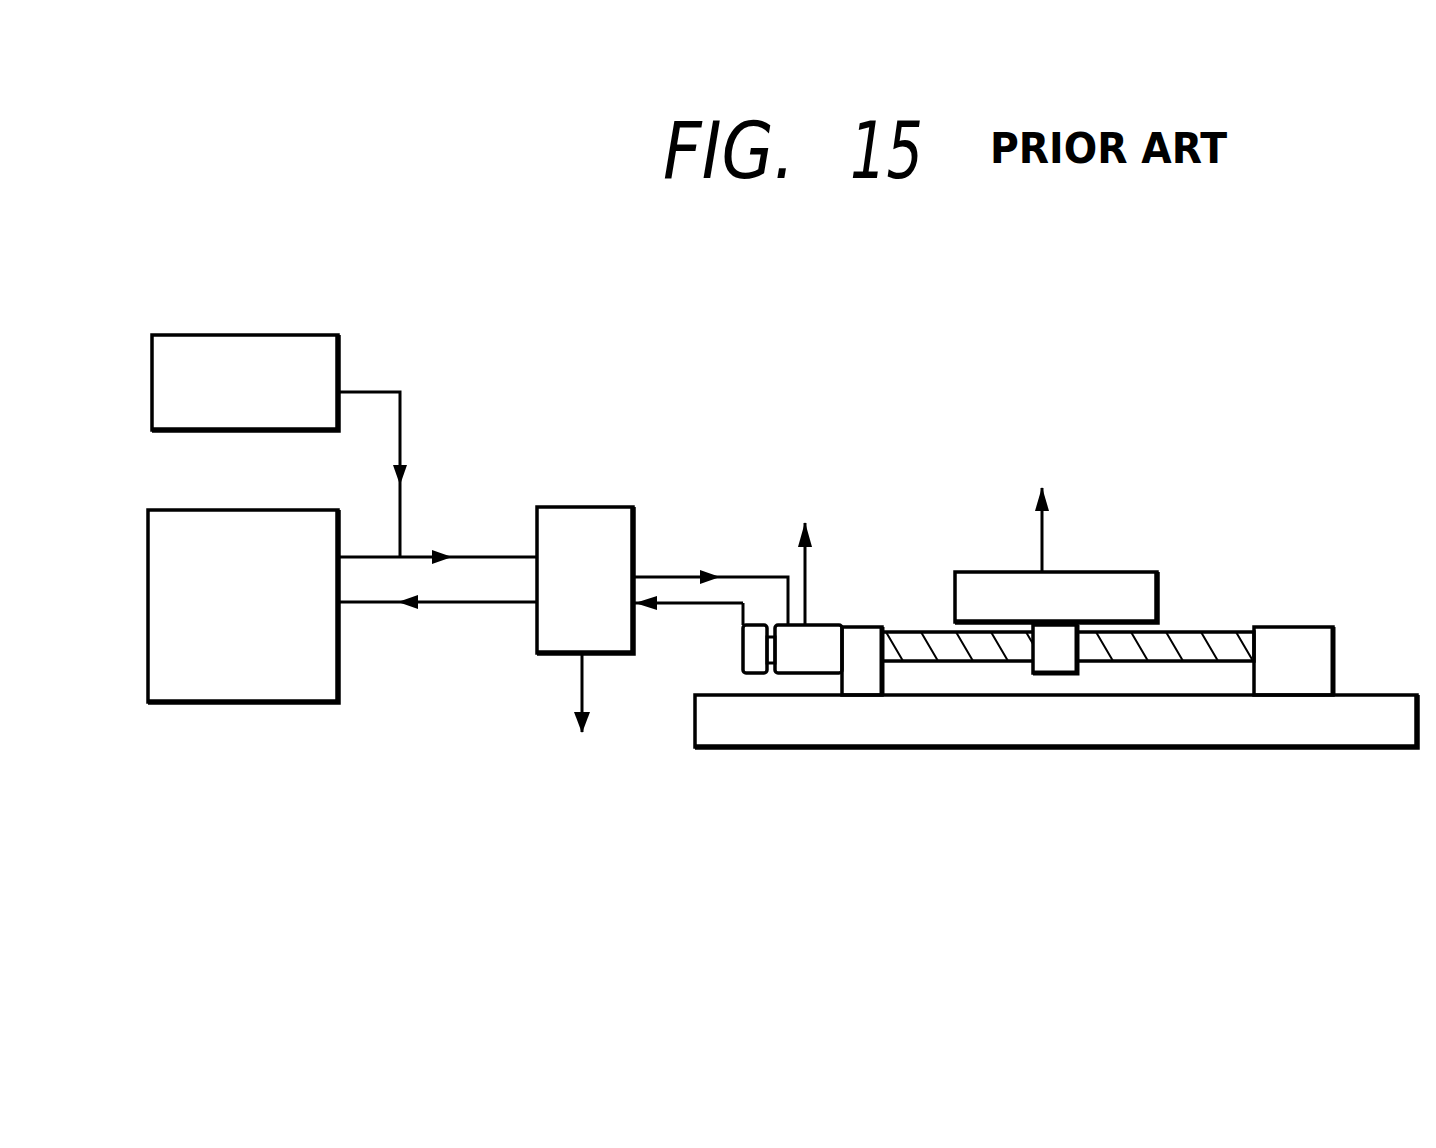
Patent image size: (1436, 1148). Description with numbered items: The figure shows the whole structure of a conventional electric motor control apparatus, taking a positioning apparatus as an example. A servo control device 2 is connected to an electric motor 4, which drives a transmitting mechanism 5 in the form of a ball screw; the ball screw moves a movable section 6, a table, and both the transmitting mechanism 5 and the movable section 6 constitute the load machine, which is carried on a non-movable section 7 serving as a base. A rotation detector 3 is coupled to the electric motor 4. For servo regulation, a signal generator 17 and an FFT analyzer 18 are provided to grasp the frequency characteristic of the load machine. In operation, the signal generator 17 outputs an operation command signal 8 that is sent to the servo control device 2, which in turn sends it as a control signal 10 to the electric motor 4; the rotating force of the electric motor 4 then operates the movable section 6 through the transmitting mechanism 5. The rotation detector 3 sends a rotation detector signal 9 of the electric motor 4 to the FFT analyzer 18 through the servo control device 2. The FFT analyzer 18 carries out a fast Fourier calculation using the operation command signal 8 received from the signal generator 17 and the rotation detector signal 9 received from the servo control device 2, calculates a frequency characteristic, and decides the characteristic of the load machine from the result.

The servo control device 2 is at (598, 507).
The rotation detector 3 is at (752, 673).
The electric motor 4 is at (818, 641).
The transmitting mechanism 5 is at (914, 644).
The movable section 6 is at (1113, 588).
The non-movable section 7 is at (946, 733).
The operation command signal 8 is at (467, 556).
The rotation detector signal 9 is at (435, 606).
The control signal 10 is at (733, 577).
The signal generator 17 is at (274, 335).
The FFT analyzer 18 is at (200, 703).